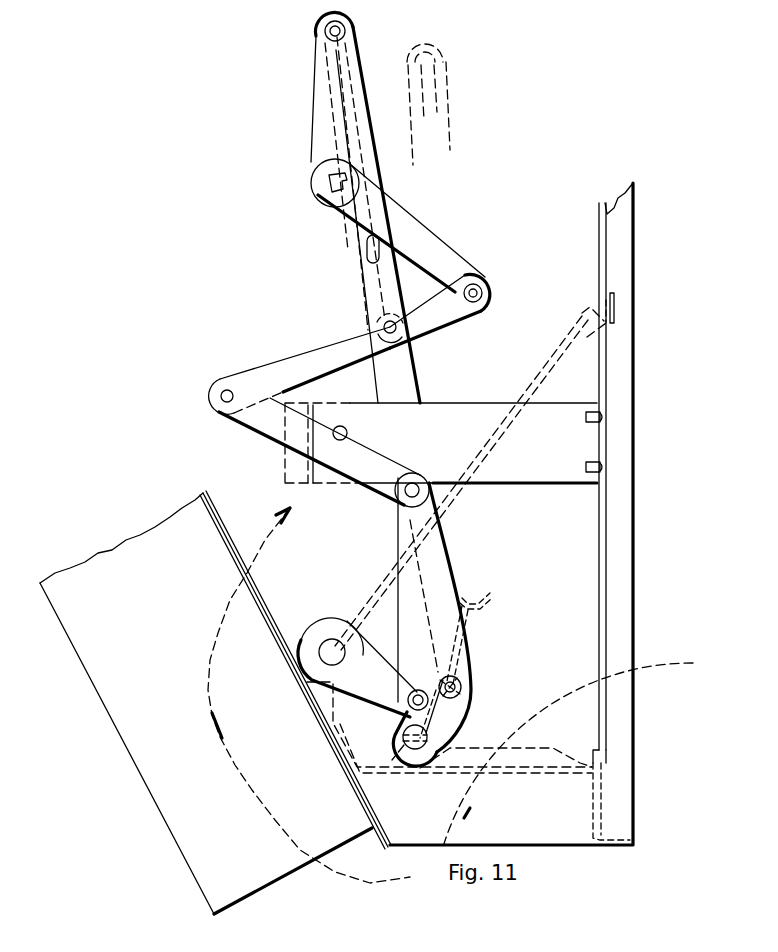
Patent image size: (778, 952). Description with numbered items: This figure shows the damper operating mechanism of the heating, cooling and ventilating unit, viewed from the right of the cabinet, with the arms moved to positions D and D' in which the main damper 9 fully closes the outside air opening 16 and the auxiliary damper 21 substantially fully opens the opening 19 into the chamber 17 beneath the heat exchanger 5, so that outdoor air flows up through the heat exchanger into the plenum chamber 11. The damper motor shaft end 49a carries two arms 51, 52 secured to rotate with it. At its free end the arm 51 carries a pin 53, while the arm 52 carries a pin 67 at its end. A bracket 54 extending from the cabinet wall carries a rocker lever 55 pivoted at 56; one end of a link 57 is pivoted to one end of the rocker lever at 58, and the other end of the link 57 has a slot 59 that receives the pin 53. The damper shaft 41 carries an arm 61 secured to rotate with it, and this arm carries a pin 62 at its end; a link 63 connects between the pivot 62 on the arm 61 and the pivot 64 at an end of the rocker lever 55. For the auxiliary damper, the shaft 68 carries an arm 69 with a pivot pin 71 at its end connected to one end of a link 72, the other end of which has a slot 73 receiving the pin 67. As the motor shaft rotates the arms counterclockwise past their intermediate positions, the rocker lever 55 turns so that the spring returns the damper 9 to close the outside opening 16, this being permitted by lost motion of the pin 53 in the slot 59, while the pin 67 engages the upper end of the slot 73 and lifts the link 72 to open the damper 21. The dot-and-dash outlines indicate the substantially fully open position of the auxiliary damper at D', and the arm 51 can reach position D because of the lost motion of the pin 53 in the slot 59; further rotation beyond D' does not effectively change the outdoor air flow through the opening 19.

The heat exchanger 5 is at (128, 736).
The damper 9 is at (541, 363).
The plenum chamber 11 is at (321, 516).
The opening 16 is at (583, 374).
The chamber 17 is at (375, 868).
The opening 19 is at (557, 768).
The auxiliary damper 21 is at (494, 608).
The damper shaft 41 is at (327, 642).
The shaft end 49a is at (329, 182).
The arm 51 is at (423, 224).
The arm 52 is at (318, 103).
The pin 53 is at (473, 305).
The bracket 54 is at (475, 403).
The rocker lever 55 is at (267, 438).
The pivot 56 is at (345, 438).
The link 57 is at (329, 333).
The pivot 58 is at (219, 396).
The slot 59 is at (430, 322).
The arm 61 is at (384, 705).
The pin 62 is at (442, 710).
The link 63 is at (398, 526).
The pivot 64 is at (406, 495).
The pin 67 is at (341, 34).
The shaft 68 is at (427, 734).
The arm 69 is at (454, 700).
The pivot pin 71 is at (462, 682).
The link 72 is at (456, 580).
The slot 73 is at (368, 247).
The position D is at (359, 315).
The position D' is at (432, 88).